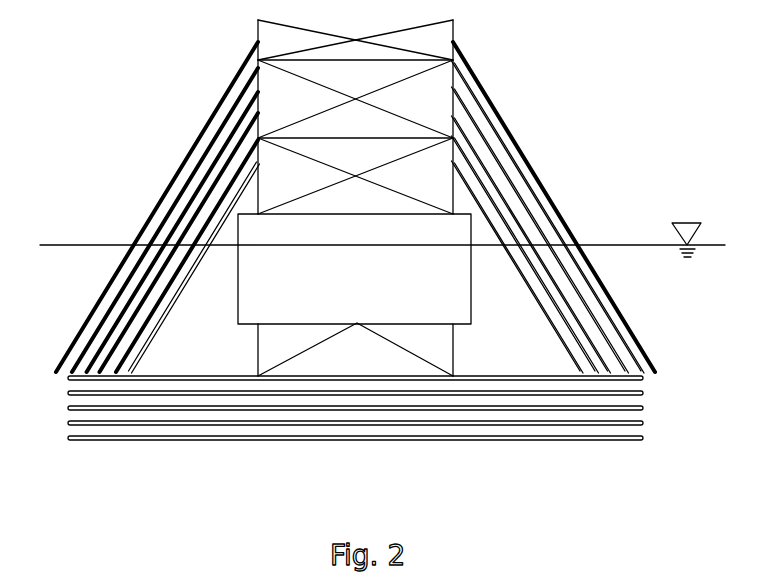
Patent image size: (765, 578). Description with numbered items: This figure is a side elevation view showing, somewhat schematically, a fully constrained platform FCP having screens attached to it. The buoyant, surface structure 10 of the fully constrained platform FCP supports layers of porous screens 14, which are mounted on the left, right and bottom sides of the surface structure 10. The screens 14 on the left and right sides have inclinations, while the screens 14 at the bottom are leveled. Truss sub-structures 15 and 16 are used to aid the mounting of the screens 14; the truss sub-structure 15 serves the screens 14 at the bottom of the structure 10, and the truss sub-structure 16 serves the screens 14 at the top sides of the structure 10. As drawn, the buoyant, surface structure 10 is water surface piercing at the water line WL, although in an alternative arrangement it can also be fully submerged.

The buoyant, surface structure 10 is at (362, 288).
The porous screens 14 is at (203, 238).
The truss sub-structure 15 is at (295, 356).
The truss sub-structure 16 is at (378, 135).
The fully constrained platform FCP is at (536, 86).
The water line WL is at (657, 247).